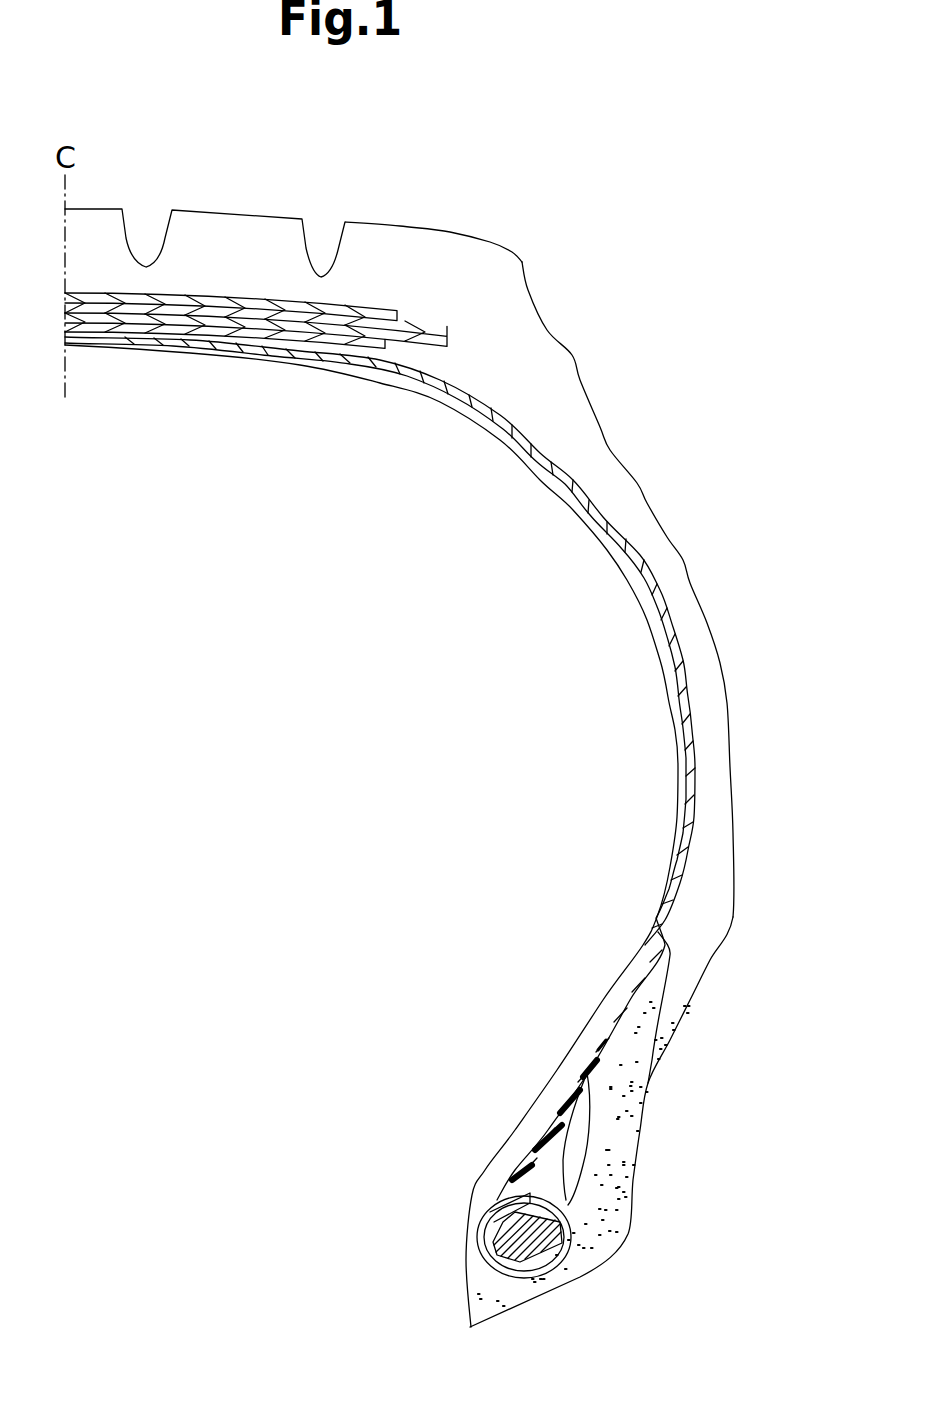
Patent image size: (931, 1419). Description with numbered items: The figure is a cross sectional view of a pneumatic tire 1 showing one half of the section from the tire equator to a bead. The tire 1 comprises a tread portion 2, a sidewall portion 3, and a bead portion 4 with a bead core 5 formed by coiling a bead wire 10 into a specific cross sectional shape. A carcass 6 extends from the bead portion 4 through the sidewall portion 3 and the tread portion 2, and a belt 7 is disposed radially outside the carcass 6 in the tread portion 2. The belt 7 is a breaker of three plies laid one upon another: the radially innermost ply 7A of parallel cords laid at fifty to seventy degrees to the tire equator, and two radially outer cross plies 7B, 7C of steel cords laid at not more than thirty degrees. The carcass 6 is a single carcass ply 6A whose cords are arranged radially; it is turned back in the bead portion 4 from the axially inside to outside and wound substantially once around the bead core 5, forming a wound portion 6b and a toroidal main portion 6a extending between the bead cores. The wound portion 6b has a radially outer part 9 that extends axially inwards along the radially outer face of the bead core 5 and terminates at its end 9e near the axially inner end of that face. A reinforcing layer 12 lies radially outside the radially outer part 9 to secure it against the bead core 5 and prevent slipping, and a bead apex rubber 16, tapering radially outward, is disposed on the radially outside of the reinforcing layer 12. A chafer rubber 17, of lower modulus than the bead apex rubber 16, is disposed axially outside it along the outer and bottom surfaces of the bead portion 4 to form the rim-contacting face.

The pneumatic tire 1 is at (595, 272).
The tread portion 2 is at (410, 213).
The sidewall portion 3 is at (740, 703).
The bead portion 4 is at (647, 1160).
The bead core 5 is at (500, 1252).
The carcass 6 is at (380, 771).
The carcass ply 6A is at (380, 771).
The toroidal main portion 6a is at (600, 1040).
The wound portion 6b is at (567, 1193).
The belt 7 is at (256, 386).
The radially innermost ply 7A is at (110, 322).
The radially outer ply 7B is at (183, 314).
The radially outer ply 7C is at (83, 441).
The radially outer part 9 is at (485, 1221).
The end of wrapping strip 9e is at (490, 1207).
The bead wire 10 is at (535, 1187).
The reinforcing layer 12 is at (523, 1190).
The bead apex rubber 16 is at (537, 1190).
The chafer rubber 17 is at (630, 1082).